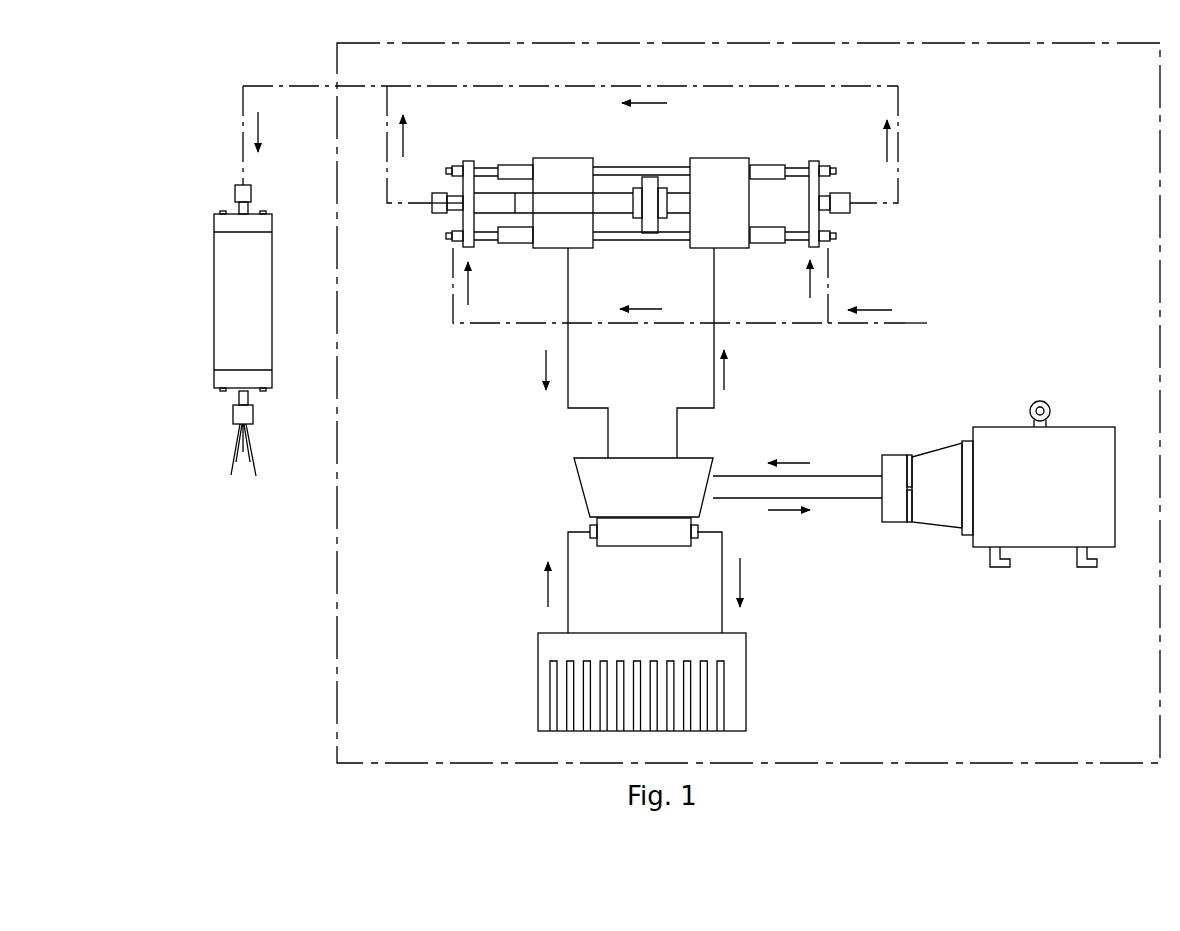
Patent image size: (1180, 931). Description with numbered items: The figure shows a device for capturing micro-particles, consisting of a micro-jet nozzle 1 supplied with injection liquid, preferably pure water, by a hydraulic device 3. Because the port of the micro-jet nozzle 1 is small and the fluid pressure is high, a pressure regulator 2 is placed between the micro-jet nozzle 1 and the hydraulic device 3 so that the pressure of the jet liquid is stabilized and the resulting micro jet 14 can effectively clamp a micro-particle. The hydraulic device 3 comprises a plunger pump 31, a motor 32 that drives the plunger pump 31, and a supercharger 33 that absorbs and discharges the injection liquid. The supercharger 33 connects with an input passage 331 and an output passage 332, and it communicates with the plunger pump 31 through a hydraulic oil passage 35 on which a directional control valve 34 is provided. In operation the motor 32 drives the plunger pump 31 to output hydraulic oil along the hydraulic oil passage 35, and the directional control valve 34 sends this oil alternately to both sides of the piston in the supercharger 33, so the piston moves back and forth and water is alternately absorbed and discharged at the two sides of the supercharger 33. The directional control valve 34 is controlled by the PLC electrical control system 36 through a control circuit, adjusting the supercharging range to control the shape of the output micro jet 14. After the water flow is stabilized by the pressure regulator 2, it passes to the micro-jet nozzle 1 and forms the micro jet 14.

The micro-jet nozzle 1 is at (231, 410).
The micro jet 14 is at (233, 450).
The pressure regulator 2 is at (228, 285).
The hydraulic device 3 is at (337, 553).
The plunger pump 31 is at (895, 462).
The motor 32 is at (1053, 458).
The supercharger 33 is at (711, 172).
The input passage 331 is at (908, 320).
The output passage 332 is at (898, 142).
The directional control valve 34 is at (610, 485).
The hydraulic oil passage 35 is at (562, 337).
The PLC electrical control system 36 is at (553, 684).